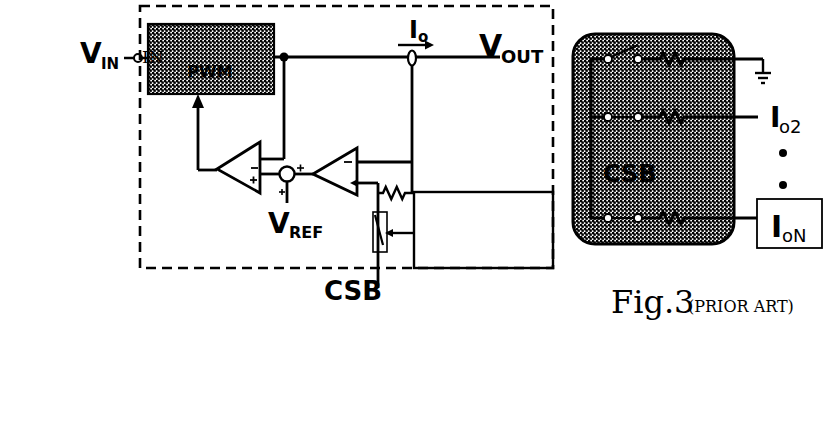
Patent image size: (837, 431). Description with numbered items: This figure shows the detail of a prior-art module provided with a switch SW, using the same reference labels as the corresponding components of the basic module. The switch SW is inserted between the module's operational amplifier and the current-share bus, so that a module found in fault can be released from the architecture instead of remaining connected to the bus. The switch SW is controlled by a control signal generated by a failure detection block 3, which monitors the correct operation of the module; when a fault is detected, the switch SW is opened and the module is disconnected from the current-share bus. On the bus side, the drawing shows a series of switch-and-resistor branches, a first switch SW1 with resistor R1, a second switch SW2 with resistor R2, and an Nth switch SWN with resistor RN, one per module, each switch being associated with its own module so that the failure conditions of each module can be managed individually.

The failure detection block 3 is at (482, 208).
The switch SW is at (381, 232).
The first switch SW1 is at (623, 65).
The first resistor R1 is at (665, 71).
The second switch SW2 is at (623, 128).
The second resistor R2 is at (665, 128).
The Nth switch SWN is at (625, 230).
The Nth resistor RN is at (665, 229).